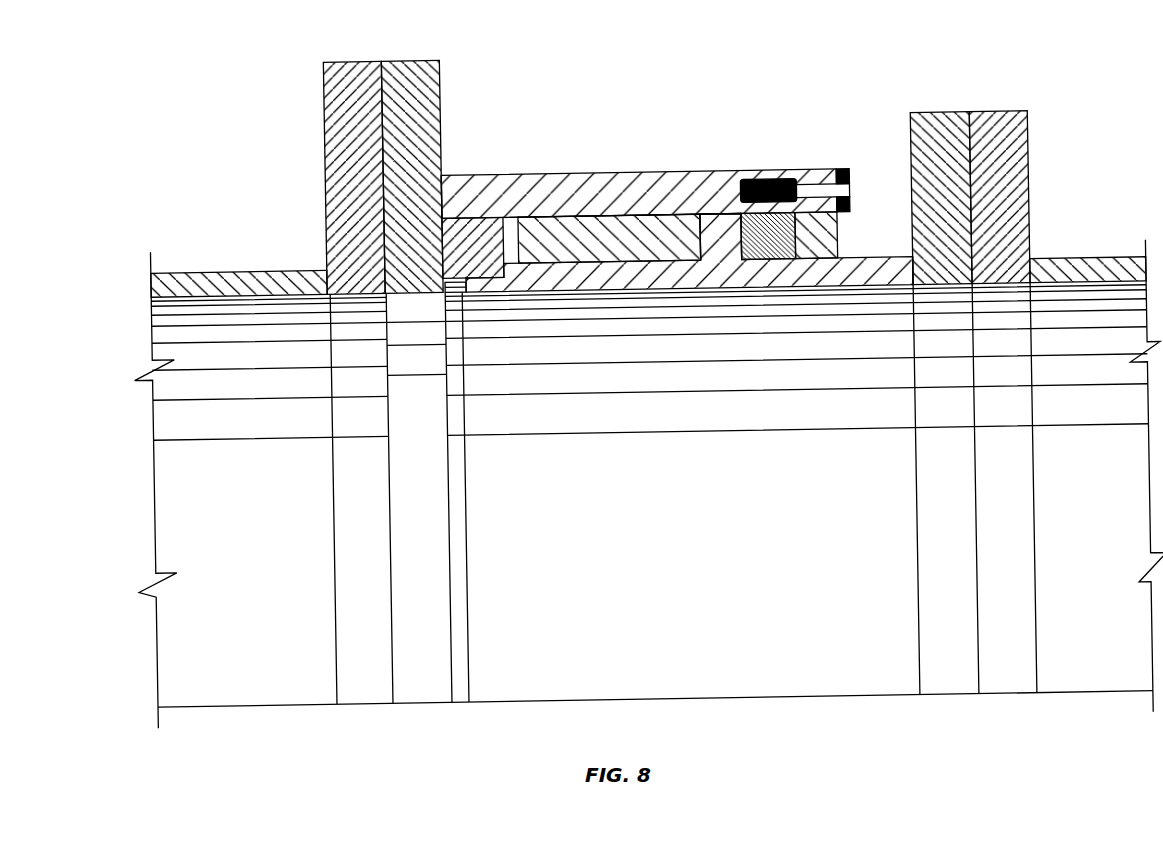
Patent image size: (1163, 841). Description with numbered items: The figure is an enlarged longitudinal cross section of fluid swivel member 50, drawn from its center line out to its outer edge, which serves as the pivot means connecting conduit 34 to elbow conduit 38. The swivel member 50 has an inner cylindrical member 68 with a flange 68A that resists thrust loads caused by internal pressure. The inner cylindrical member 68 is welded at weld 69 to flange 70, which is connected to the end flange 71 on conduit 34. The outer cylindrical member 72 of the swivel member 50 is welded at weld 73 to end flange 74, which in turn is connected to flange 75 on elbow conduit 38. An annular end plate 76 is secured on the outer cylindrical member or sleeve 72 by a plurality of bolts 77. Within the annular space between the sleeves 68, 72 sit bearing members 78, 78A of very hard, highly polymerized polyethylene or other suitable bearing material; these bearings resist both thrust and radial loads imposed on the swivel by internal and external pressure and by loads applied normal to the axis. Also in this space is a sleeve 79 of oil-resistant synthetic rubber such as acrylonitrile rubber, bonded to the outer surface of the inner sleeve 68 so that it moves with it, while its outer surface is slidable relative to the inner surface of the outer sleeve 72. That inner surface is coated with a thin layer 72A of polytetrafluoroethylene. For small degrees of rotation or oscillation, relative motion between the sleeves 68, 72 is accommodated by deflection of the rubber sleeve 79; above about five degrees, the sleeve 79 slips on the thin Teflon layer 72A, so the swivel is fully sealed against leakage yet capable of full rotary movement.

The fluid swivel member 50 is at (677, 173).
The conduit 34 is at (1111, 257).
The elbow conduit 38 is at (257, 273).
The inner cylindrical member 68 is at (656, 291).
The flange 68A is at (707, 230).
The weld 69 is at (911, 260).
The flange 70 is at (945, 118).
The end flange 71 is at (1015, 135).
The outer cylindrical member 72 is at (505, 175).
The thin layer of polymer 72A is at (558, 217).
The weld 73 is at (447, 174).
The end flange 74 is at (421, 98).
The flange 75 is at (343, 150).
The annular end plate 76 is at (838, 238).
The bolts 77 is at (848, 177).
The bearing member 78 is at (783, 250).
The bearing member 78A is at (454, 280).
The rubber sleeve 79 is at (637, 235).